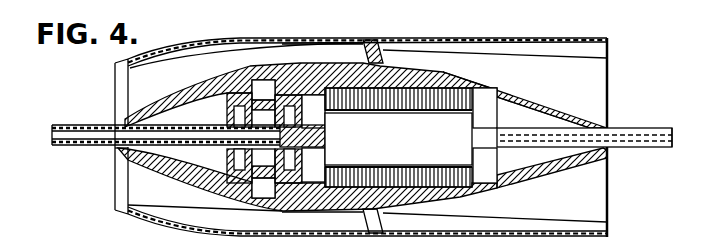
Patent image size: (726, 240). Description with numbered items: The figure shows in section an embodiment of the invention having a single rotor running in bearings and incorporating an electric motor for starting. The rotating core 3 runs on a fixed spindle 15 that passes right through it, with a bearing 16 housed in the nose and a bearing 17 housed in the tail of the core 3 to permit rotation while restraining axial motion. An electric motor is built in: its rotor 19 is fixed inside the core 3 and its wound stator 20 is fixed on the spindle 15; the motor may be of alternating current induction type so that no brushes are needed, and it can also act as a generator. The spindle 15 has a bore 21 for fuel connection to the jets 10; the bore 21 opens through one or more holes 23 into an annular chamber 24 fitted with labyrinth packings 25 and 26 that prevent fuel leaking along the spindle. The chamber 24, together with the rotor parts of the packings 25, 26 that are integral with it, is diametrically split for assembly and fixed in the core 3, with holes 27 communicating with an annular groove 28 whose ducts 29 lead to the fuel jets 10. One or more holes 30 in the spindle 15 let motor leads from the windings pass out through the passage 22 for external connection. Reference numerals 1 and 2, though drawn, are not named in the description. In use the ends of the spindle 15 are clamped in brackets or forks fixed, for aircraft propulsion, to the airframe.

The support strut 1 is at (380, 42).
The outer casing 2 is at (380, 52).
The core 3 is at (498, 89).
The fuel jets 10 is at (314, 62).
The fixed spindle 15 is at (67, 147).
The nose bearing 16 is at (115, 148).
The tail bearing 17 is at (612, 149).
The motor rotor 19 is at (475, 90).
The wound stator 20 is at (415, 137).
The spindle bore 21 is at (52, 138).
The spindle end passage 22 is at (672, 138).
The holes 23 is at (263, 157).
The annular chamber 24 is at (263, 119).
The labyrinth packing 25 is at (228, 109).
The labyrinth packing 26 is at (296, 120).
The holes 27 is at (263, 182).
The annular groove 28 is at (263, 95).
The ducts 29 is at (287, 64).
The holes 30 is at (505, 131).